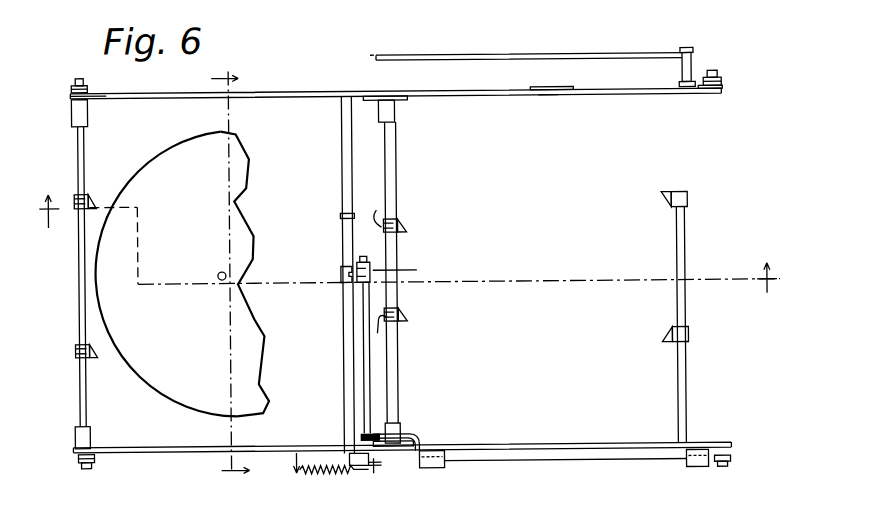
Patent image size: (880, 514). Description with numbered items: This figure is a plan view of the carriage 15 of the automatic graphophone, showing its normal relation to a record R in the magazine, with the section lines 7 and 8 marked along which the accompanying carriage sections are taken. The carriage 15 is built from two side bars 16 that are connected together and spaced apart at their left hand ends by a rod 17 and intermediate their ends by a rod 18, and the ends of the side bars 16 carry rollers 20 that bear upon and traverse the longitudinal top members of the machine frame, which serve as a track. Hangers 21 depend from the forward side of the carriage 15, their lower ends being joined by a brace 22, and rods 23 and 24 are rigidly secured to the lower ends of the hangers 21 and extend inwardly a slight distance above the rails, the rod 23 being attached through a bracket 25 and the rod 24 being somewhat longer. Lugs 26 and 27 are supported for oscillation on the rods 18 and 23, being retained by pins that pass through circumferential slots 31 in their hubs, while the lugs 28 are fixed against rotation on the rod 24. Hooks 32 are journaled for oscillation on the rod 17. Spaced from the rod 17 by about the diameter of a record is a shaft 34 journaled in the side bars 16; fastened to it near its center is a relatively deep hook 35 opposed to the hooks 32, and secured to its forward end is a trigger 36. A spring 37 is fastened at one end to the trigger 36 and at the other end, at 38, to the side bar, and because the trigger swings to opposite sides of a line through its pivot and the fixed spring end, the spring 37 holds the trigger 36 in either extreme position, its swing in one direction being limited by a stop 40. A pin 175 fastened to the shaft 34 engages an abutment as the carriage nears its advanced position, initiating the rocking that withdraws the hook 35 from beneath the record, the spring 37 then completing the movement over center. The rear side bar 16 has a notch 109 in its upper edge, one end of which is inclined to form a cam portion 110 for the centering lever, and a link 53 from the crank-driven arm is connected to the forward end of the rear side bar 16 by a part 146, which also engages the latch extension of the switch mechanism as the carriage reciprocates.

The section line 7- 7 is at (410, 244).
The section line 8- 8 is at (222, 282).
The carriage 15 is at (544, 444).
The side bars 16 is at (323, 94).
The rod 17 is at (85, 134).
The rod 18 is at (395, 147).
The rollers 20 is at (72, 85).
The hangers 21 is at (437, 467).
The brace 22 is at (528, 463).
The rod 23 is at (368, 378).
The rod 24 is at (688, 391).
The bracket 25 is at (417, 432).
The lugs 26 is at (405, 223).
The lugs 27 is at (377, 253).
The lugs 28 is at (672, 202).
The circumferential slots 31 is at (402, 272).
The hooks 32 is at (97, 197).
The shaft 34 is at (345, 173).
The hook 35 is at (343, 273).
The trigger 36 is at (352, 453).
The spring 37 is at (357, 470).
The spring anchor point 38 is at (295, 475).
The stop 40 is at (363, 470).
The link 53 is at (545, 55).
The notch 109 is at (563, 92).
The cam portion 110 is at (545, 97).
The connecting part 146 is at (693, 66).
The pin 175 is at (342, 218).
The record R is at (252, 339).